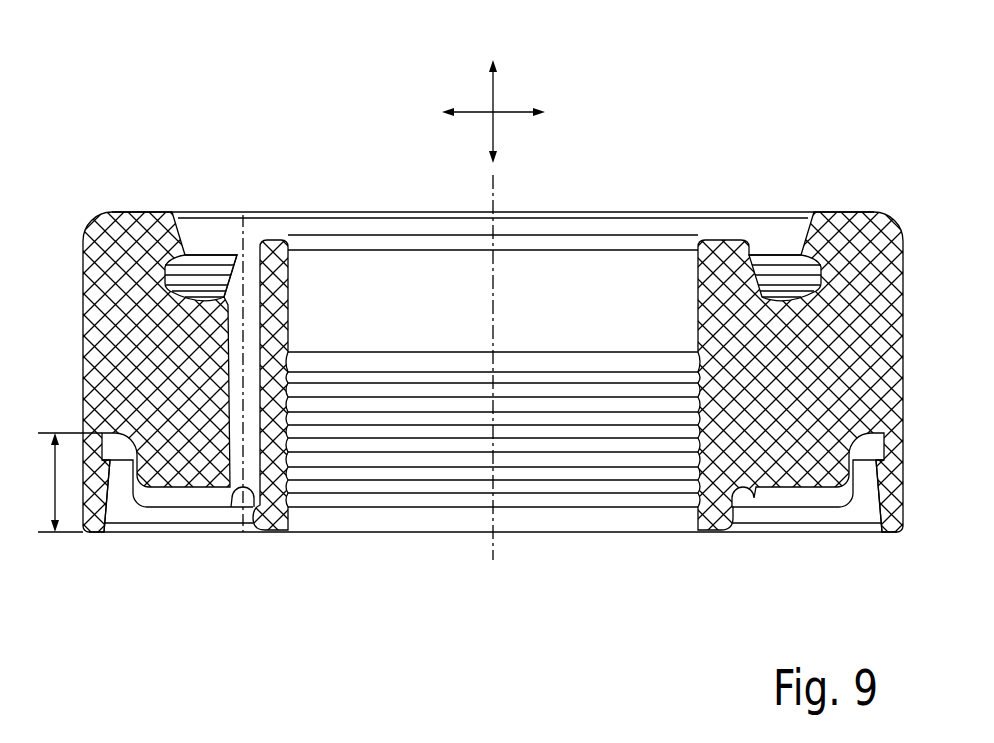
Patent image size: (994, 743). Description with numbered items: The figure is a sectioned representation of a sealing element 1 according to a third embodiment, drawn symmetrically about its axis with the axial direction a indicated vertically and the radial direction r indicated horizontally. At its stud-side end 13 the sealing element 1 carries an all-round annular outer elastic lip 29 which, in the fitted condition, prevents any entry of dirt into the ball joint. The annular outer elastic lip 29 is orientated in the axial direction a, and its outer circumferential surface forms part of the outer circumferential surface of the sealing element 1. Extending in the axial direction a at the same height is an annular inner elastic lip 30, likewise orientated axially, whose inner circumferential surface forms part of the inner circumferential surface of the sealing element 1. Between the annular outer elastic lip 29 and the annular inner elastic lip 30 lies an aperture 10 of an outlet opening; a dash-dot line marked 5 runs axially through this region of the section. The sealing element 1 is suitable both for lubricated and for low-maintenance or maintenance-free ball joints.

The sealing element 1 is at (672, 165).
The slot 5 is at (251, 230).
The aperture 10 is at (230, 503).
The stud-side end 13 is at (70, 482).
The annular outer elastic lip 29 is at (93, 512).
The annular inner elastic lip 30 is at (263, 518).
The axial direction a is at (487, 92).
The radial direction r is at (510, 112).